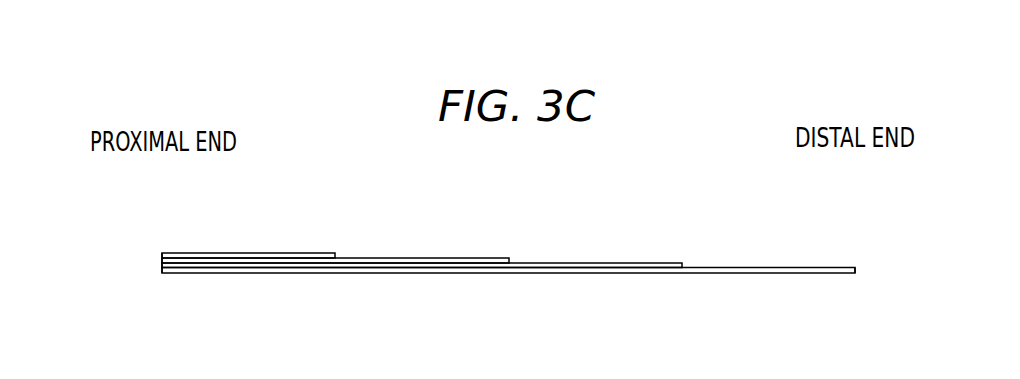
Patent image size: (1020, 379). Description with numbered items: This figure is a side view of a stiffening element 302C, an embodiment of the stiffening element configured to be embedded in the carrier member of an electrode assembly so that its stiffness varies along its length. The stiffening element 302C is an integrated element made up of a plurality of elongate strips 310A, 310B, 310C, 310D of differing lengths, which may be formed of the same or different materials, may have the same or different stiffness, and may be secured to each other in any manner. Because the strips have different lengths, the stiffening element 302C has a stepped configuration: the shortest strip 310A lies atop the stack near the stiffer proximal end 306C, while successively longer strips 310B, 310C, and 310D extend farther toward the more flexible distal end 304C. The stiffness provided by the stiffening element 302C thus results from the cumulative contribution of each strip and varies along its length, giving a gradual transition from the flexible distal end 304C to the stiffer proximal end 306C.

The stiffening element 302C is at (470, 236).
The distal end 304C is at (855, 267).
The proximal end 306C is at (162, 252).
The elongate strip 310A is at (313, 253).
The elongate strip 310B is at (493, 258).
The elongate strip 310C is at (607, 263).
The elongate strip 310D is at (711, 268).